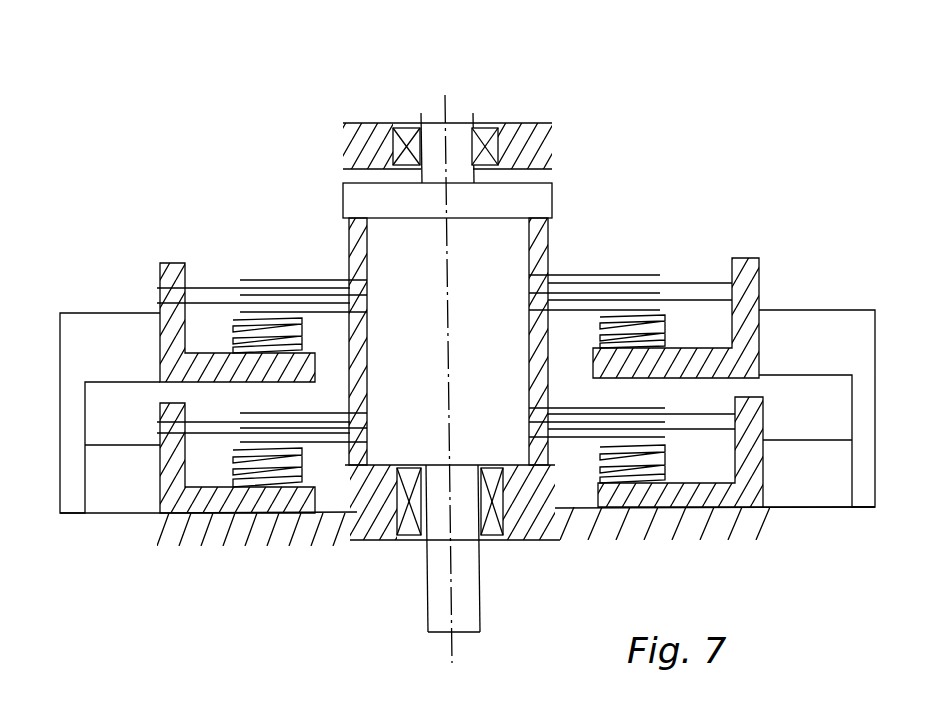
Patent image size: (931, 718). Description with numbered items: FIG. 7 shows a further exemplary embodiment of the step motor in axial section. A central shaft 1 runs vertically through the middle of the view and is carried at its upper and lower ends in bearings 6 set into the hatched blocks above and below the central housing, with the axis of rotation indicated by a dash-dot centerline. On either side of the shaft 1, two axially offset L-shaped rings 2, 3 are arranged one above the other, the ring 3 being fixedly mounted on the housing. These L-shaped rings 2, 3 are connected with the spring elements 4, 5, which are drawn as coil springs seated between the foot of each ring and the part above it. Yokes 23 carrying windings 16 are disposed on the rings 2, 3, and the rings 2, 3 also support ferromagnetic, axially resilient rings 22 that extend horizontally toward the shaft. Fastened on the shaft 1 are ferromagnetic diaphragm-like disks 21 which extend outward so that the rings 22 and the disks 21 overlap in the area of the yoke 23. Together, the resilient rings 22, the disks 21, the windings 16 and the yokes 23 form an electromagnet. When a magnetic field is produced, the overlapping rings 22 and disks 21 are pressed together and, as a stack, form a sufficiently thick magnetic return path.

The shaft 1 is at (470, 615).
The L-shaped ring 2 is at (156, 296).
The L-shaped ring 3 is at (252, 514).
The spring element 4 is at (105, 332).
The spring element 5 is at (120, 500).
The bearing 6 is at (487, 128).
The winding 16 is at (300, 474).
The diaphragm-like disk 21 is at (592, 281).
The axially resilient ring 22 is at (208, 287).
The yoke 23 is at (240, 462).